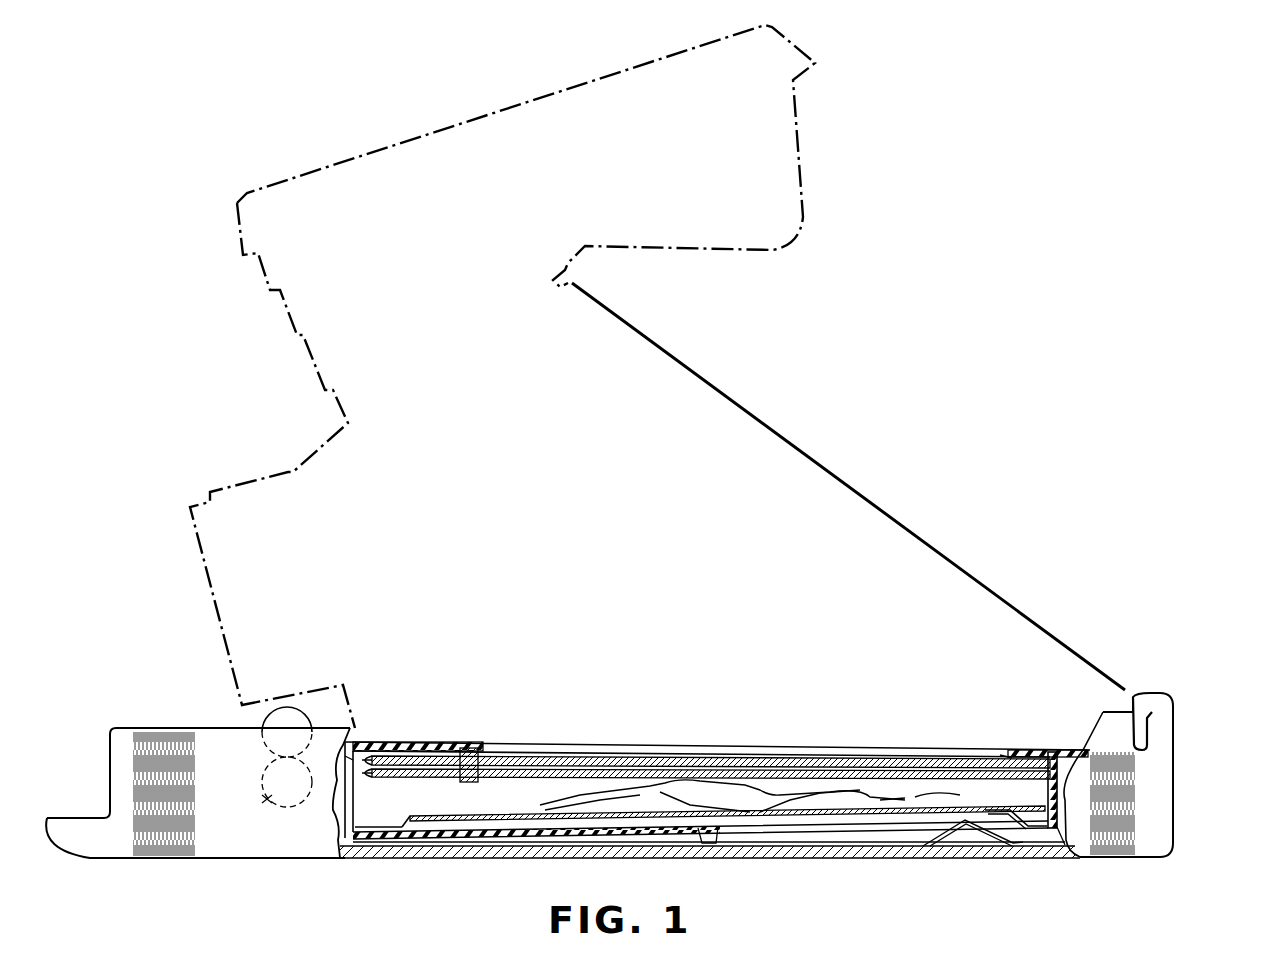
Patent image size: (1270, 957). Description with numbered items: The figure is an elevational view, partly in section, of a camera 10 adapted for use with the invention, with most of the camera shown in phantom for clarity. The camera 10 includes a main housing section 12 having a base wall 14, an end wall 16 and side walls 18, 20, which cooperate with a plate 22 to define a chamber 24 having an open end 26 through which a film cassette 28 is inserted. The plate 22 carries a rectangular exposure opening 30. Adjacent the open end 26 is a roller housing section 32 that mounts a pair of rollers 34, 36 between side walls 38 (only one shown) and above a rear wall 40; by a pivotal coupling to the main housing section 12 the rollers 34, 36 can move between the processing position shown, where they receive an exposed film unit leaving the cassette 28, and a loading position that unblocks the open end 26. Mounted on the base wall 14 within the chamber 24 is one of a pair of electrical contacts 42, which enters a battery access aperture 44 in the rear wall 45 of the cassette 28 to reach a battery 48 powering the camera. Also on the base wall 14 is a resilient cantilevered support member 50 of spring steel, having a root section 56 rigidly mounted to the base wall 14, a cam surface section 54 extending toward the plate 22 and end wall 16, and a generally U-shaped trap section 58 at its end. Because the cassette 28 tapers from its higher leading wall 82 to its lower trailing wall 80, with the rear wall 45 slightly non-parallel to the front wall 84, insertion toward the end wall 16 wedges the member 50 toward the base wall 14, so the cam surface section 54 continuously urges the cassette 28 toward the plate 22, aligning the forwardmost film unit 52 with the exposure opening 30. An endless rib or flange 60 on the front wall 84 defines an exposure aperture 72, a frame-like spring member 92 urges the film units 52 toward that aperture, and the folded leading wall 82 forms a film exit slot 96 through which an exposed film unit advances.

The camera 10 is at (858, 478).
The main housing section 12 is at (1158, 759).
The base wall 14 is at (808, 849).
The end wall 16 is at (1176, 758).
The side wall 18 is at (773, 844).
The side wall 20 is at (1153, 823).
The plate 22 is at (420, 742).
The chamber 24 is at (737, 841).
The open end 26 is at (385, 845).
The film cassette 28 is at (334, 812).
The exposure opening 30 is at (696, 797).
The roller housing section 32 is at (198, 778).
The roller 34 is at (293, 722).
The roller 36 is at (264, 798).
The side wall 38 is at (224, 785).
The rear wall 40 is at (217, 875).
The electrical contact 42 is at (992, 842).
The battery access aperture 44 is at (1035, 848).
The rear wall 45 is at (1082, 856).
The battery 48 is at (998, 812).
The support member 50 is at (585, 844).
The film unit 52 is at (595, 758).
The cam surface section 54 is at (668, 841).
The root section 56 is at (520, 848).
The trap section 58 is at (707, 845).
The rib or flange 60 is at (474, 745).
The exposure aperture 72 is at (699, 744).
The trailing wall 80 is at (1060, 754).
The leading wall 82 is at (342, 838).
The front wall 84 is at (402, 742).
The spring member 92 is at (907, 794).
The film exit slot 96 is at (351, 758).